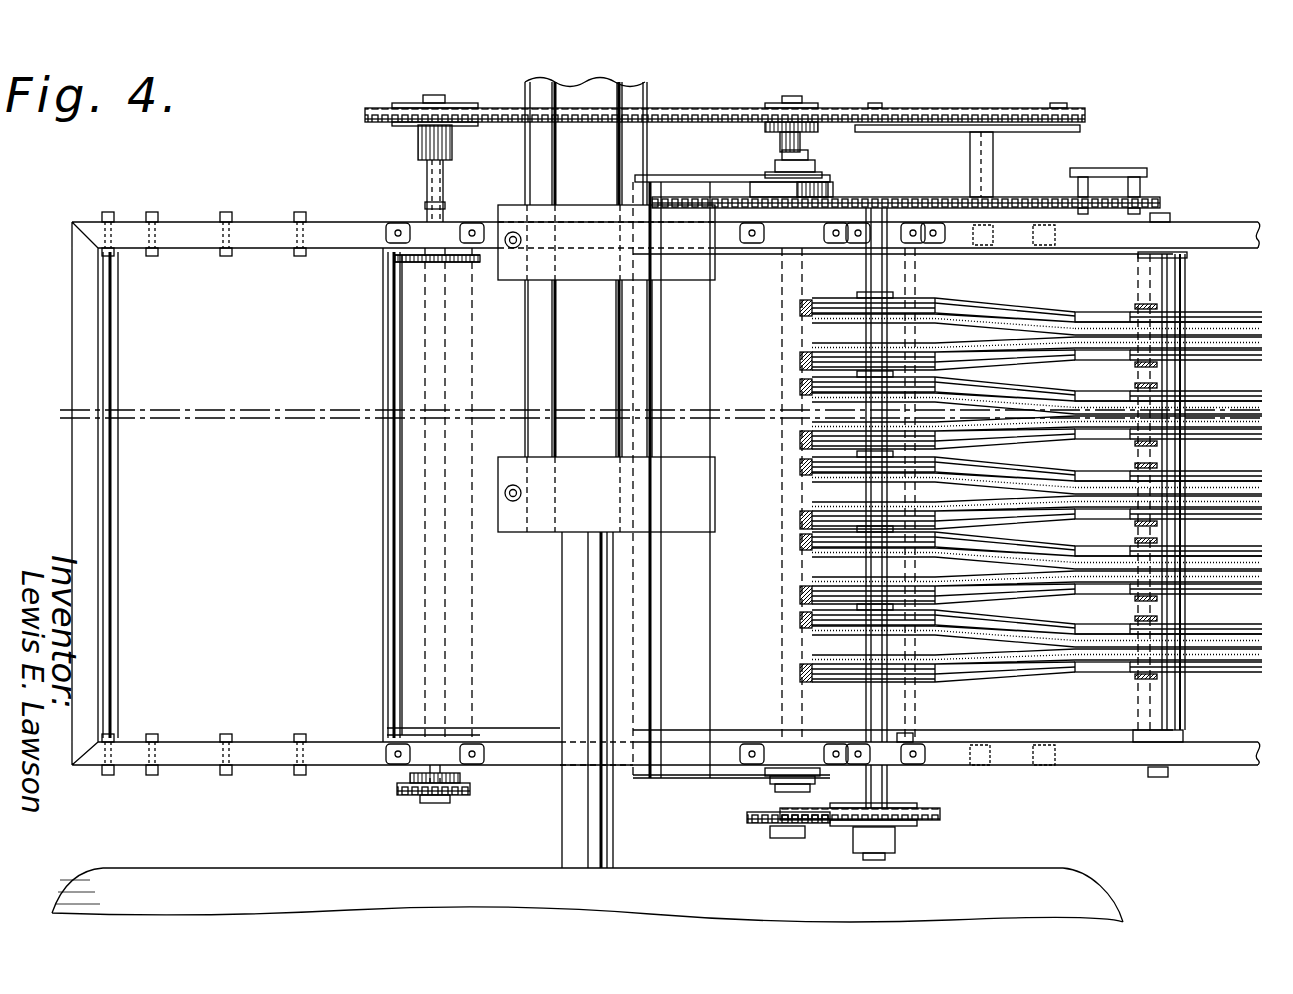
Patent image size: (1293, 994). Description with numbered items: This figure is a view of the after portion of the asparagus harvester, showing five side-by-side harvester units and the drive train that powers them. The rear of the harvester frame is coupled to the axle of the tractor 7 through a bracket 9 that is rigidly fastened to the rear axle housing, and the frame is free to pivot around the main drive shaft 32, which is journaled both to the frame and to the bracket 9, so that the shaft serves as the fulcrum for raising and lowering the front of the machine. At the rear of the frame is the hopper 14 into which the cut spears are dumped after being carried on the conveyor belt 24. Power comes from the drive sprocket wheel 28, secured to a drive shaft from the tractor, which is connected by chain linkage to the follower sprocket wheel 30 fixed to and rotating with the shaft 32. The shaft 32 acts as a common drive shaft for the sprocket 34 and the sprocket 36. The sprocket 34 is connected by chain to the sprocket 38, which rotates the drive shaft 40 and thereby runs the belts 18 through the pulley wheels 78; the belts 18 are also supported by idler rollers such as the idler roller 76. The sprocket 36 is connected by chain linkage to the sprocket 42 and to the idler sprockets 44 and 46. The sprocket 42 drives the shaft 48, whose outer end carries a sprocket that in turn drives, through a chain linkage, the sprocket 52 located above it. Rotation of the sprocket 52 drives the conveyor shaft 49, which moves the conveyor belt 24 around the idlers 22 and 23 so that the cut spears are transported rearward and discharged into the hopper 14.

The tractor 7 is at (562, 826).
The bracket 9 is at (718, 612).
The hopper 14 is at (222, 710).
The belts 18 is at (800, 358).
The idler 22 is at (1180, 733).
The idler 23 is at (910, 735).
The conveyor belt 24 is at (1095, 722).
The drive sprocket wheel 28 is at (1147, 197).
The follower sprocket wheel 30 is at (832, 206).
The main drive shaft 32 is at (782, 145).
The sprocket 34 is at (745, 812).
The sprocket 36 is at (798, 110).
The sprocket 38 is at (935, 805).
The drive shaft 40 is at (888, 792).
The sprocket 42 is at (430, 104).
The idler sprocket 44 is at (1068, 125).
The idler sprocket 46 is at (890, 122).
The shaft 48 is at (428, 172).
The conveyor shaft 49 is at (428, 212).
The sprocket 52 is at (455, 797).
The idler roller 76 is at (1090, 318).
The pulley wheels 78 is at (800, 406).